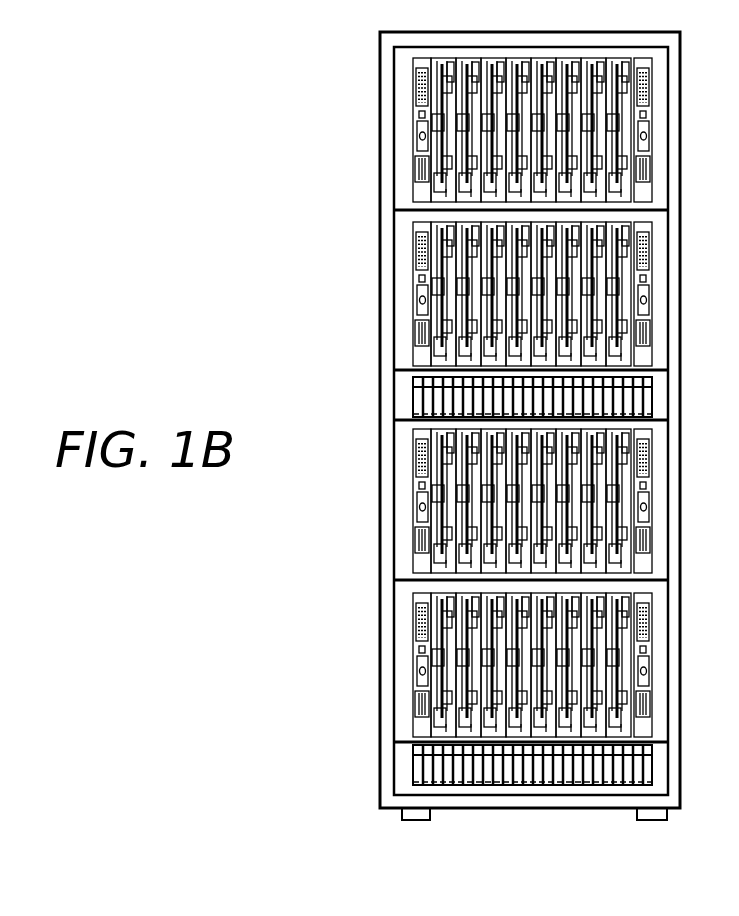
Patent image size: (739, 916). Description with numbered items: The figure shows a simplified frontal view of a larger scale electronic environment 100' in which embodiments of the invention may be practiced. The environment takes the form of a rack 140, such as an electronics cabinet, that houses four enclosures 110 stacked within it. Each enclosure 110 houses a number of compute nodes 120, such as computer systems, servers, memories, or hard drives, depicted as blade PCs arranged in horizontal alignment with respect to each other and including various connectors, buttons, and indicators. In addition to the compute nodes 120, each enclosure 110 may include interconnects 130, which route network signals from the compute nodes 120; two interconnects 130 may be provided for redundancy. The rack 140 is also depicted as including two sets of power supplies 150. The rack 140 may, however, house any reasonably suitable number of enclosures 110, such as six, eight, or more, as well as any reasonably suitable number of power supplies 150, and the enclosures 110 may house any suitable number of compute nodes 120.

The electronic environment 100' is at (374, 426).
The rack 140 is at (381, 86).
The enclosure 110 is at (395, 150).
The compute nodes 120 is at (428, 533).
The interconnects 130 is at (418, 650).
The power supplies 150 is at (395, 400).